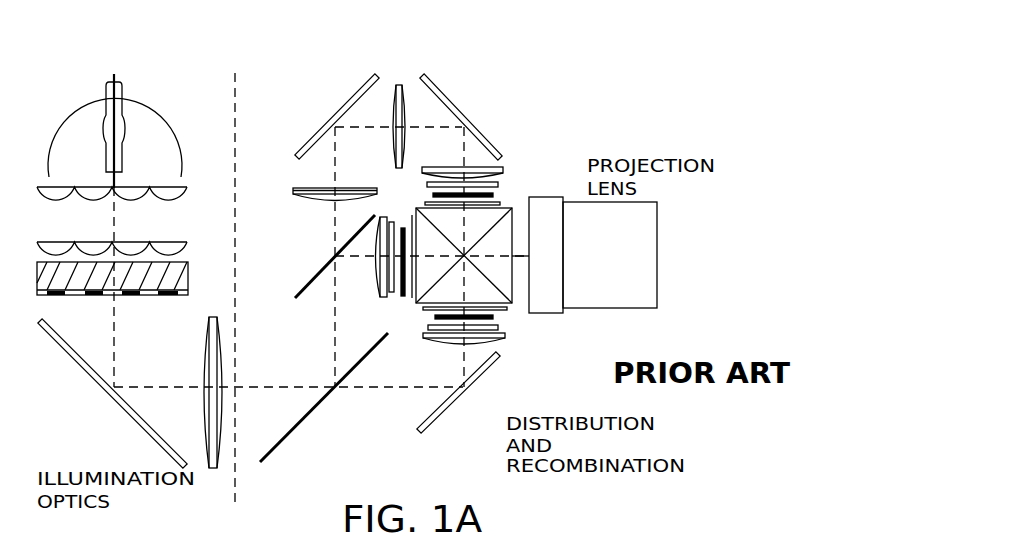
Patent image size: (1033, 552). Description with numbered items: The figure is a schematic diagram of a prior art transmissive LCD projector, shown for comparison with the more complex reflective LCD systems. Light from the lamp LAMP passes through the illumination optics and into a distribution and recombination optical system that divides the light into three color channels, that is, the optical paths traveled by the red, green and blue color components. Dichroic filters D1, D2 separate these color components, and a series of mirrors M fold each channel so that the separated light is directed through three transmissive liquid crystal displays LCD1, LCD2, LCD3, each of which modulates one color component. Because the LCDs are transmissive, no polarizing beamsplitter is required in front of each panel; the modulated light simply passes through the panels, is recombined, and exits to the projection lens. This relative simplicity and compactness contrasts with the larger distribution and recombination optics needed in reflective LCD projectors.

The lamp LAMP is at (95, 117).
The mirror M is at (401, 253).
The first transmissive LCD LCD1 is at (493, 317).
The second transmissive LCD LCD2 is at (402, 290).
The third transmissive LCD LCD3 is at (500, 192).
The first dichroic filter D1 is at (324, 397).
The second dichroic filter D2 is at (334, 256).